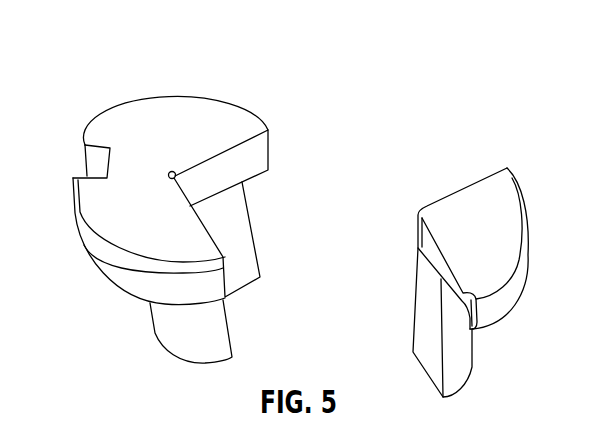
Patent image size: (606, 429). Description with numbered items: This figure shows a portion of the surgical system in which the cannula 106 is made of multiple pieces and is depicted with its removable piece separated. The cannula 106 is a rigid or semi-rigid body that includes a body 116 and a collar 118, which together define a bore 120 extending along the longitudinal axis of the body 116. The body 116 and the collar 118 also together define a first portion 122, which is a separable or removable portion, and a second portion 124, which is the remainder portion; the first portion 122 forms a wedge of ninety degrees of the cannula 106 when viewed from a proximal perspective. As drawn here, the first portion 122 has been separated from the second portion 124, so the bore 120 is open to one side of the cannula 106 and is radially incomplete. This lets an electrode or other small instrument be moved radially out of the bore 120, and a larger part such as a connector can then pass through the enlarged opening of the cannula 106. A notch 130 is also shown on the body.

The cannula 106 is at (219, 84).
The body 116 is at (140, 333).
The collar 118 is at (100, 212).
The bore 120 is at (169, 174).
The first portion 122 is at (487, 150).
The second portion 124 is at (280, 143).
The notch 130 is at (100, 162).